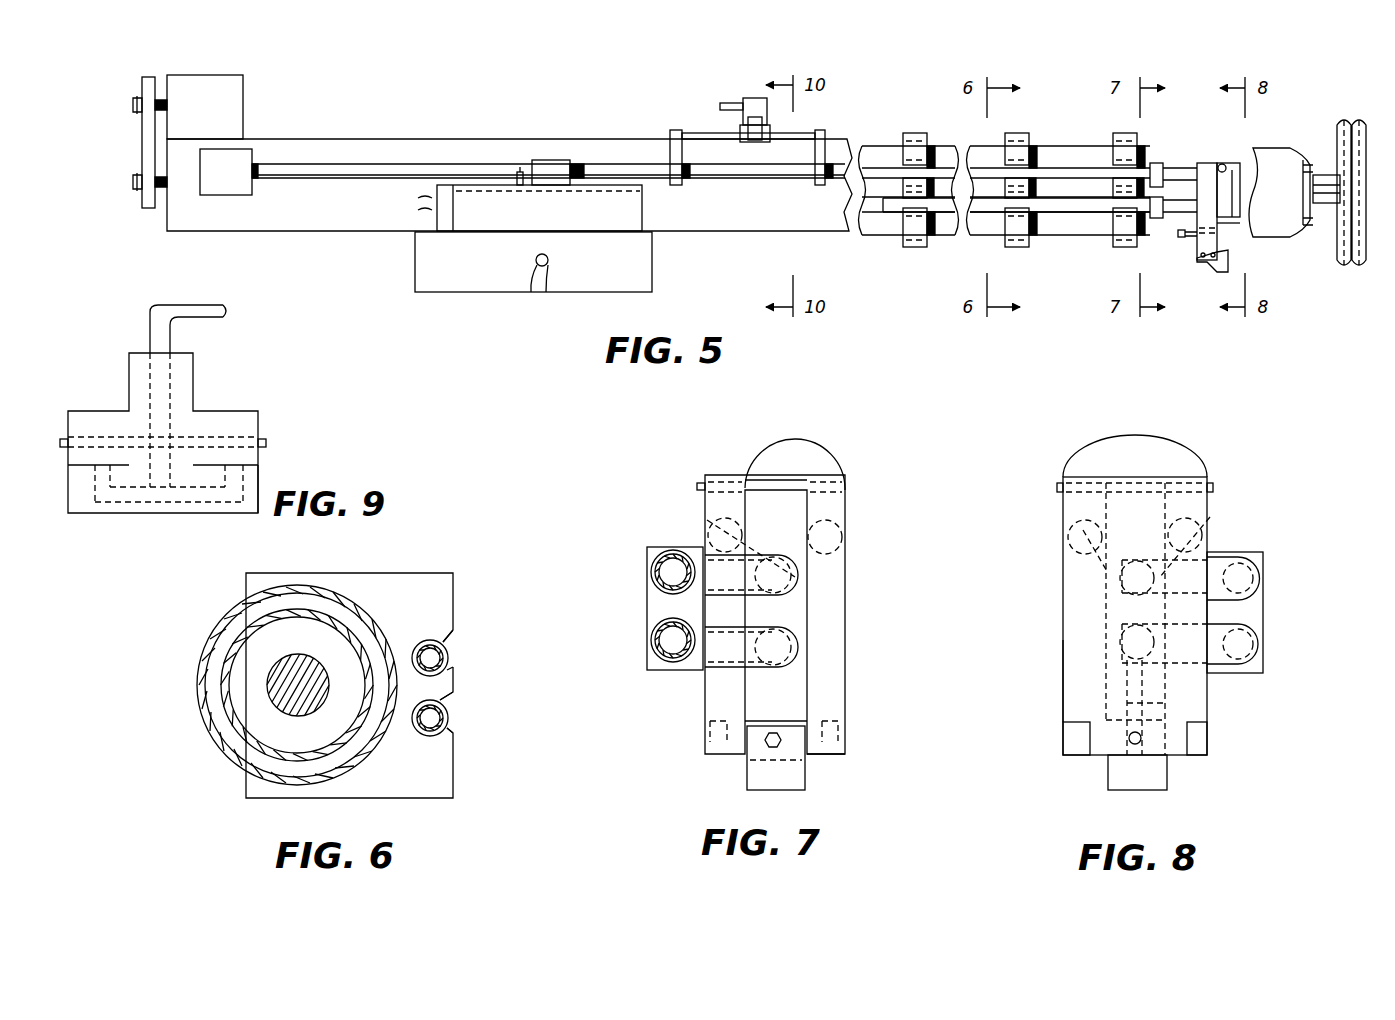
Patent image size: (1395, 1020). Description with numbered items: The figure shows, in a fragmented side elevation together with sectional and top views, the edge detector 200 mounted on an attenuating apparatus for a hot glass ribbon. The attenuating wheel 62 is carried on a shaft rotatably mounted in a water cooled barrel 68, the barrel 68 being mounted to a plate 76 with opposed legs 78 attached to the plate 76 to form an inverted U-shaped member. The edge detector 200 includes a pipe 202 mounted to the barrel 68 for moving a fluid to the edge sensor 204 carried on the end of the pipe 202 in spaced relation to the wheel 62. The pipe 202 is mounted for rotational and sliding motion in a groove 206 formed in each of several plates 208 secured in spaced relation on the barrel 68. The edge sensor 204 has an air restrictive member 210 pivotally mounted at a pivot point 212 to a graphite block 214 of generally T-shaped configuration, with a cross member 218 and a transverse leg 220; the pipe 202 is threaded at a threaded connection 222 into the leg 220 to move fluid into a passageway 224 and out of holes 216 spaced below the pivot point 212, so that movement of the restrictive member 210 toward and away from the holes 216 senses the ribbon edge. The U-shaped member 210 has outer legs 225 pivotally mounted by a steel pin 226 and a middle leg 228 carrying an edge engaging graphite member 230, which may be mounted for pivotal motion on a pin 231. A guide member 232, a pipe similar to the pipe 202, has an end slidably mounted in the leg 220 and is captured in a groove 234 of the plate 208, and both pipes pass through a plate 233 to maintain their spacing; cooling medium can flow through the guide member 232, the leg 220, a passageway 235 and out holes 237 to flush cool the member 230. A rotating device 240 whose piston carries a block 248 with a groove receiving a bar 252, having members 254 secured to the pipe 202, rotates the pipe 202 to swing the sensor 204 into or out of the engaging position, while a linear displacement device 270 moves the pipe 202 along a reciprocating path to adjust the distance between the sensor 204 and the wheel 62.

In FIG. 5, the attenuating wheel 62 is at (1365, 120).
In FIG. 5, the water cooled barrel 68 is at (362, 139).
In FIG. 6, the water cooled barrel 68 is at (197, 681).
In FIG. 5, the plate 76 is at (652, 231).
In FIG. 5, the legs 78 is at (415, 252).
In FIG. 5, the edge detector 200 is at (602, 160).
In FIG. 5, the pipe 202 is at (308, 164).
In FIG. 9, the pipe 202 is at (195, 303).
In FIG. 6, the pipe 202 is at (449, 656).
In FIG. 7, the pipe 202 is at (651, 566).
In FIG. 8, the pipe 202 is at (1232, 567).
In FIG. 5, the edge sensor 204 is at (1236, 160).
In FIG. 9, the edge sensor 204 is at (278, 384).
In FIG. 8, the edge sensor 204 is at (1058, 556).
In FIG. 6, the groove 206 is at (453, 632).
In FIG. 5, the plates 208 is at (913, 250).
In FIG. 6, the plates 208 is at (432, 801).
In FIG. 5, the air restrictive member 210 is at (1238, 188).
In FIG. 9, the air restrictive member 210 is at (230, 408).
In FIG. 7, the air restrictive member 210 is at (832, 720).
In FIG. 8, the air restrictive member 210 is at (1060, 737).
In FIG. 5, the pivot point 212 is at (1222, 164).
In FIG. 9, the pivot point 212 is at (60, 441).
In FIG. 7, the pivot point 212 is at (747, 482).
In FIG. 8, the pivot point 212 is at (1184, 446).
In FIG. 5, the block 214 is at (1242, 203).
In FIG. 9, the block 214 is at (78, 515).
In FIG. 7, the block 214 is at (840, 565).
In FIG. 8, the block 214 is at (1058, 585).
In FIG. 9, the holes 216 is at (97, 480).
In FIG. 7, the holes 216 is at (715, 525).
In FIG. 8, the holes 216 is at (1083, 530).
In FIG. 9, the cross member 218 is at (258, 482).
In FIG. 8, the cross member 218 is at (1063, 663).
In FIG. 5, the transverse leg 220 is at (1205, 163).
In FIG. 9, the transverse leg 220 is at (129, 365).
In FIG. 7, the transverse leg 220 is at (745, 698).
In FIG. 5, the threaded connection 222 is at (1195, 175).
In FIG. 9, the threaded connection 222 is at (168, 353).
In FIG. 9, the passageway 224 is at (162, 492).
In FIG. 7, the passageway 224 is at (740, 573).
In FIG. 8, the passageway 224 is at (1175, 577).
In FIG. 5, the outer legs 225 is at (1230, 225).
In FIG. 9, the outer legs 225 is at (120, 410).
In FIG. 7, the outer legs 225 is at (705, 689).
In FIG. 8, the outer legs 225 is at (1080, 681).
In FIG. 9, the steel pin 226 is at (87, 438).
In FIG. 7, the steel pin 226 is at (697, 486).
In FIG. 8, the steel pin 226 is at (1055, 484).
In FIG. 7, the middle leg 228 is at (846, 744).
In FIG. 8, the middle leg 228 is at (1207, 741).
In FIG. 5, the edge engaging member 230 is at (1228, 265).
In FIG. 7, the edge engaging member 230 is at (795, 793).
In FIG. 8, the edge engaging member 230 is at (1118, 797).
In FIG. 5, the pin 231 is at (1190, 237).
In FIG. 7, the pin 231 is at (766, 741).
In FIG. 8, the pin 231 is at (1130, 742).
In FIG. 5, the guide member 232 is at (1072, 205).
In FIG. 6, the guide member 232 is at (446, 707).
In FIG. 7, the guide member 232 is at (651, 637).
In FIG. 8, the guide member 232 is at (1243, 635).
In FIG. 5, the plate 233 is at (1162, 220).
In FIG. 7, the plate 233 is at (647, 600).
In FIG. 6, the groove 234 is at (446, 727).
In FIG. 8, the passageway 235 is at (1145, 706).
In FIG. 5, the holes 237 is at (1207, 265).
In FIG. 5, the rotating device 240 is at (748, 93).
In FIG. 5, the block 248 is at (757, 130).
In FIG. 5, the bar 252 is at (698, 133).
In FIG. 5, the members 254 is at (670, 139).
In FIG. 5, the linear displacement device 270 is at (550, 155).